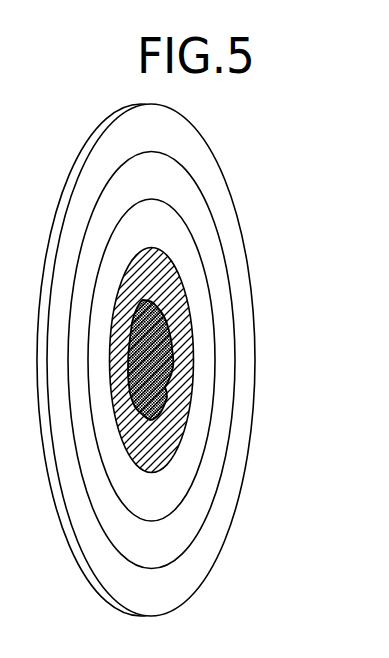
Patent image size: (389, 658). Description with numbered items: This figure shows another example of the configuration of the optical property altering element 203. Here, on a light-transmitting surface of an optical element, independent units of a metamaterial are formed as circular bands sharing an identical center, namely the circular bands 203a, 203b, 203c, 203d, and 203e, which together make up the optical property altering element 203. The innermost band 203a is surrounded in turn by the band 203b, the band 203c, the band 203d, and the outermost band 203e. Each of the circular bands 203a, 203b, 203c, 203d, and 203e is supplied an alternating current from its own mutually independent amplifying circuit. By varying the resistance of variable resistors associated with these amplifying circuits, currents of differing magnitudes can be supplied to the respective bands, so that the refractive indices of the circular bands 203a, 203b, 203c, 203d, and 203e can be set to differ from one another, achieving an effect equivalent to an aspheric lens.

The optical property altering element 203 is at (271, 166).
The circular band 203a is at (153, 331).
The circular band 203b is at (187, 368).
The circular band 203c is at (203, 411).
The circular band 203d is at (208, 479).
The circular band 203e is at (197, 560).